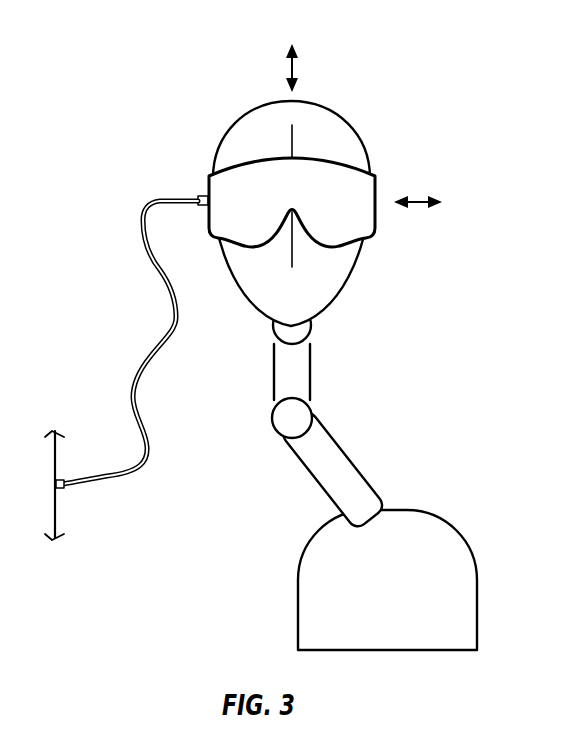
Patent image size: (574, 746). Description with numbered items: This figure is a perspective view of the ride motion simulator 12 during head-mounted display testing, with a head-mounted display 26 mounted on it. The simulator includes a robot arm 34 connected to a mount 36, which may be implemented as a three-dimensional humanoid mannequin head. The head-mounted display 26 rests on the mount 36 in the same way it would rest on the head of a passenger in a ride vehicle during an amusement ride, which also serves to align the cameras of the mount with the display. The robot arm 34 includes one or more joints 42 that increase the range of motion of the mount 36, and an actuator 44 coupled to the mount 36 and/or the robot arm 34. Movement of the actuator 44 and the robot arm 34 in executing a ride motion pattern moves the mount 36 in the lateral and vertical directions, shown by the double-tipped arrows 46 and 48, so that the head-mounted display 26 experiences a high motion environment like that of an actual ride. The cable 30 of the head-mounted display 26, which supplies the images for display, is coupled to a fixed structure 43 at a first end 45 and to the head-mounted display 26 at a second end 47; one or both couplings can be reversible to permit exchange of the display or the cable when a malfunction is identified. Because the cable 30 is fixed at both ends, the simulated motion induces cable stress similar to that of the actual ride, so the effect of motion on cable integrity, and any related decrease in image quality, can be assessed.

The ride motion simulator 12 is at (178, 82).
The head-mounted display 26 is at (318, 158).
The mount 36 is at (322, 102).
The double-tipped arrow 48 is at (297, 66).
The double-tipped arrow 46 is at (422, 195).
The second end 47 is at (198, 196).
The cable 30 is at (164, 336).
The fixed structure 43 is at (57, 463).
The first end 45 is at (63, 489).
The actuator 44 is at (272, 323).
The joint 42 is at (272, 429).
The robot arm 34 is at (351, 463).